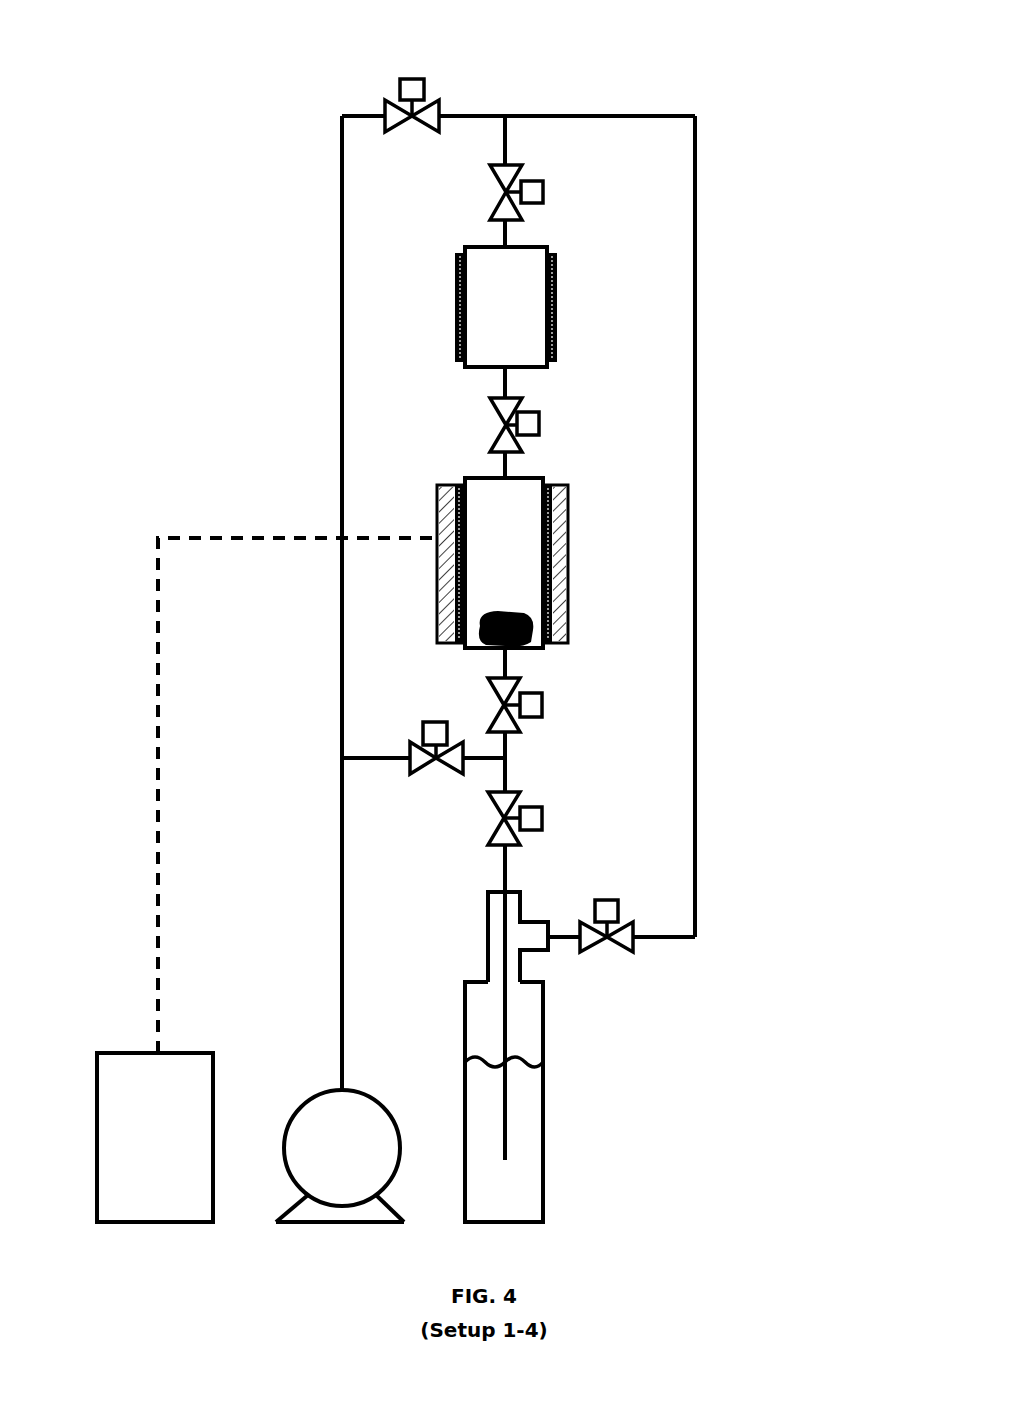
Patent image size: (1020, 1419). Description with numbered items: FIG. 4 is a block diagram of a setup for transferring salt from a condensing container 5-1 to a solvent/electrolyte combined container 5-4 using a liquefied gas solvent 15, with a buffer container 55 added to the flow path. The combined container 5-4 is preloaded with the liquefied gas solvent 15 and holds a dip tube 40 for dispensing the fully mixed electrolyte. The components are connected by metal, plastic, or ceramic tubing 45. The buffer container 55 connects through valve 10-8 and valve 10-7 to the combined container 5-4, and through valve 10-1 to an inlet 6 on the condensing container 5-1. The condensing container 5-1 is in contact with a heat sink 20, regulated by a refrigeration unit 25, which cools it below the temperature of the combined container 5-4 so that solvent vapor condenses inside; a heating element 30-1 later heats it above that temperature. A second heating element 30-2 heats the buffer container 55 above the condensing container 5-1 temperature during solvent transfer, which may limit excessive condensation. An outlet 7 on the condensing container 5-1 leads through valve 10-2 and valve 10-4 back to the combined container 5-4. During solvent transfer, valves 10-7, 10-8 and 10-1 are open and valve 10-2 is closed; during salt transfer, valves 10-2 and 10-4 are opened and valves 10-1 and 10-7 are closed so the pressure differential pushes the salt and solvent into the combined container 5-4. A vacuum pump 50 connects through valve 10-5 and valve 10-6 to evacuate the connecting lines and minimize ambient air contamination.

The valve 10-5 is at (418, 79).
The valve 10-8 is at (543, 190).
The buffer container 55 is at (545, 246).
The second heating element 30-2 is at (557, 330).
The valve 10-1 is at (539, 412).
The inlet 6 is at (503, 477).
The condensing container 5-1 is at (527, 477).
The heating element 30-1 is at (568, 535).
The heat sink 20 is at (568, 605).
The outlet 7 is at (505, 650).
The valve 10-2 is at (542, 700).
The valve 10-6 is at (455, 763).
The valve 10-4 is at (542, 815).
The tubing 45 is at (695, 582).
The valve 10-7 is at (615, 948).
The dip tube 40 is at (500, 965).
The liquefied gas solvent 15 is at (528, 1185).
The solvent/electrolyte combined container 5-4 is at (543, 1098).
The refrigeration unit 25 is at (213, 1090).
The vacuum pump 50 is at (353, 1090).